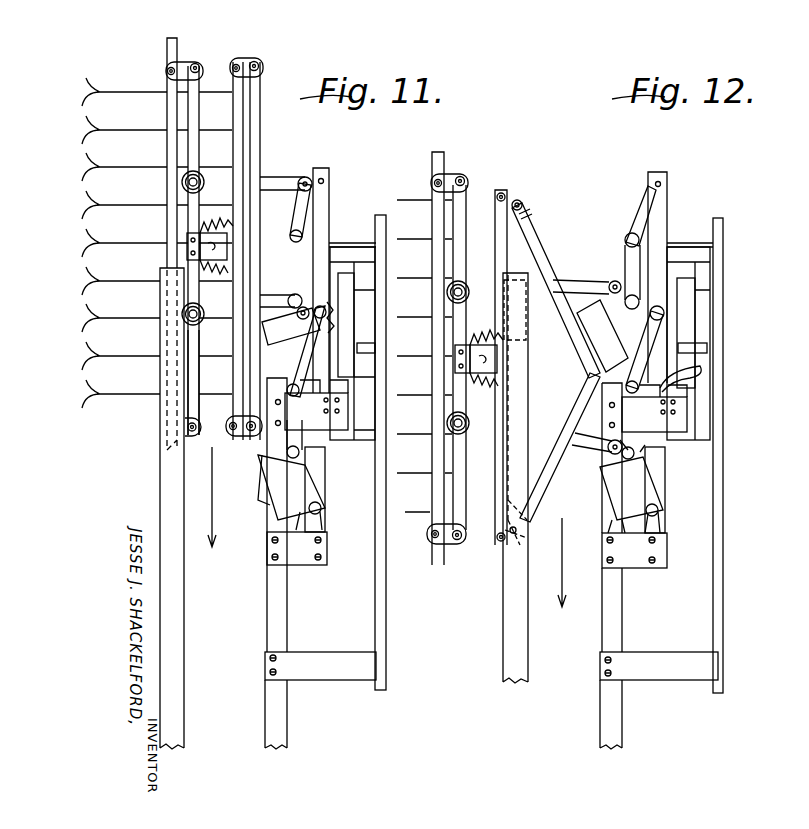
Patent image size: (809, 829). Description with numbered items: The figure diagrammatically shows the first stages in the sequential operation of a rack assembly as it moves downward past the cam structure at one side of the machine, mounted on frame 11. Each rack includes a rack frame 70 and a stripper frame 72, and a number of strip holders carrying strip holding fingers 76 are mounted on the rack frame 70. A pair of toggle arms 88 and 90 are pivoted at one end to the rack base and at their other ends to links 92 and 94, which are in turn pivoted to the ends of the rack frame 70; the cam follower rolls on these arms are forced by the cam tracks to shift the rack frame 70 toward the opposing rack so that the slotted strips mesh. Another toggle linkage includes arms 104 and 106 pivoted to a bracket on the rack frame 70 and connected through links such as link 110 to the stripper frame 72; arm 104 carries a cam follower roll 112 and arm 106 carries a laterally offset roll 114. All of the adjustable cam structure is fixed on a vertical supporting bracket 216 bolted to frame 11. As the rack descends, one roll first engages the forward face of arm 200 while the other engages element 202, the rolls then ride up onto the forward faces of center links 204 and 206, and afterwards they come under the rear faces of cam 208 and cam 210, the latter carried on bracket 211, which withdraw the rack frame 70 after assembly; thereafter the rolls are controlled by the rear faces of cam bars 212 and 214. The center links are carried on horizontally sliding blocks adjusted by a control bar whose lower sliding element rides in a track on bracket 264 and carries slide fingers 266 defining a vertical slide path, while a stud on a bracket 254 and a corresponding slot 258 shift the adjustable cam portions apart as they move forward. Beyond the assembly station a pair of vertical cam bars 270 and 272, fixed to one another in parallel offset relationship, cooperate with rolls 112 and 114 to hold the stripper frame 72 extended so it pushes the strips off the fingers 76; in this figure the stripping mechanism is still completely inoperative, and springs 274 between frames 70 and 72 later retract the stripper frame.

In FIG. 11, the frame 11 is at (378, 630).
In FIG. 12, the frame 11 is at (723, 626).
In FIG. 11, the rack frame 70 is at (234, 140).
In FIG. 12, the rack frame 70 is at (500, 258).
In FIG. 11, the stripper frame 72 is at (178, 44).
In FIG. 12, the stripper frame 72 is at (440, 160).
In FIG. 11, the strip holding fingers 76 is at (118, 71).
In FIG. 12, the strip holding fingers 76 is at (418, 190).
In FIG. 11, the toggle arm 88 is at (253, 110).
In FIG. 12, the toggle arm 88 is at (542, 244).
In FIG. 11, the toggle arm 90 is at (262, 292).
In FIG. 12, the toggle arm 90 is at (557, 450).
In FIG. 12, the link 92 is at (513, 196).
In FIG. 11, the link 94 is at (287, 440).
In FIG. 12, the link 94 is at (525, 547).
In FIG. 11, the arm 104 is at (196, 112).
In FIG. 11, the arm 106 is at (190, 338).
In FIG. 11, the link 110 is at (168, 432).
In FIG. 12, the link 110 is at (437, 560).
In FIG. 11, the cam follower roll 112 is at (183, 183).
In FIG. 12, the cam follower roll 112 is at (468, 295).
In FIG. 11, the cam follower roll 114 is at (182, 313).
In FIG. 12, the cam follower roll 114 is at (448, 428).
In FIG. 11, the arm 200 is at (303, 210).
In FIG. 12, the arm 200 is at (640, 212).
In FIG. 11, the element 202 is at (312, 345).
In FIG. 12, the element 202 is at (652, 328).
In FIG. 12, the center link 204 is at (630, 257).
In FIG. 11, the center link 206 is at (262, 455).
In FIG. 12, the center link 206 is at (630, 438).
In FIG. 12, the cam 208 is at (607, 283).
In FIG. 11, the cam 210 is at (265, 472).
In FIG. 12, the cam 210 is at (600, 465).
In FIG. 12, the bracket 211 is at (603, 492).
In FIG. 11, the cam bar 212 is at (270, 518).
In FIG. 12, the cam bar 212 is at (708, 340).
In FIG. 11, the cam bar 214 is at (265, 605).
In FIG. 12, the cam bar 214 is at (602, 612).
In FIG. 11, the vertical supporting bracket 216 is at (328, 187).
In FIG. 12, the vertical supporting bracket 216 is at (667, 196).
In FIG. 12, the bracket 254 is at (697, 367).
In FIG. 12, the slot 258 is at (670, 393).
In FIG. 11, the bracket 264 is at (350, 440).
In FIG. 11, the slide finger 266 is at (320, 395).
In FIG. 11, the vertical cam bar 270 is at (177, 450).
In FIG. 12, the vertical cam bar 270 is at (517, 380).
In FIG. 11, the vertical cam bar 272 is at (162, 468).
In FIG. 12, the vertical cam bar 272 is at (505, 607).
In FIG. 12, the springs 274 is at (496, 337).